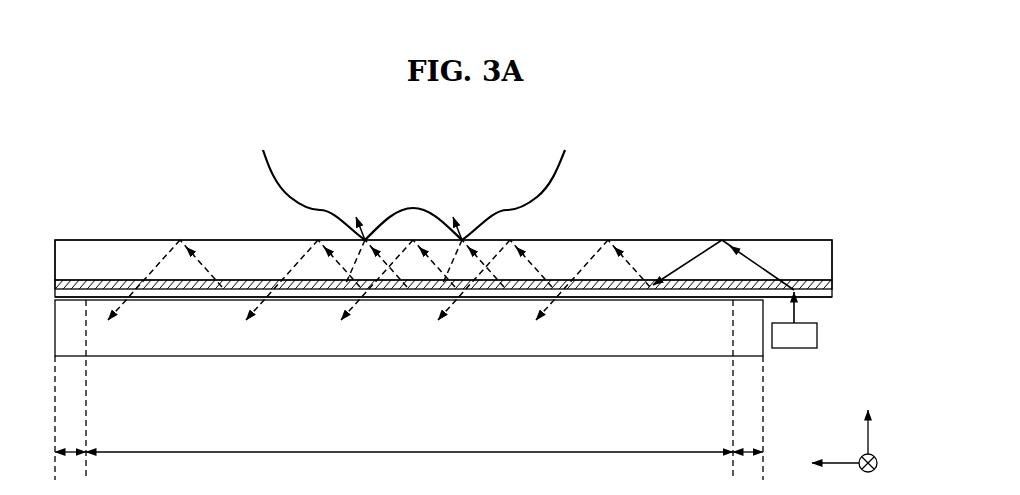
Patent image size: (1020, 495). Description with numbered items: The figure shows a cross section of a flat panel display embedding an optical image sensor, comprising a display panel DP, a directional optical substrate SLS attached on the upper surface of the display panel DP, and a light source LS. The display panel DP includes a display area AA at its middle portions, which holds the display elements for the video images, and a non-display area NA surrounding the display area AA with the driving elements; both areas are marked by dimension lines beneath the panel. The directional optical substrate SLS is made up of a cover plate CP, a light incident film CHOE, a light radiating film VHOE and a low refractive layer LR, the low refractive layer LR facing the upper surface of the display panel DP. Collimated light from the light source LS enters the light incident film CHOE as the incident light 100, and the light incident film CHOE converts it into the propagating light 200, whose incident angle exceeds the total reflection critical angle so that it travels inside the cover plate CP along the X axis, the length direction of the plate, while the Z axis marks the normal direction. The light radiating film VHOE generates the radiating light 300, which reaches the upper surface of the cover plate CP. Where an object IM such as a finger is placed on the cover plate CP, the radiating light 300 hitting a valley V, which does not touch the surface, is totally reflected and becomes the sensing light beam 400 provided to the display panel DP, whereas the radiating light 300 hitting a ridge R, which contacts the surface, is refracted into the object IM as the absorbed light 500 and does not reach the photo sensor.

The incident light 100 is at (787, 313).
The propagating light 200 is at (695, 266).
The radiating light 300 is at (204, 268).
The sensing light beam 400 is at (125, 308).
The absorbed light 500 is at (364, 243).
The object IM is at (286, 183).
The ridge R is at (371, 236).
The valley V is at (416, 205).
The directional optical substrate SLS is at (828, 171).
The cover plate CP is at (657, 252).
The light radiating film VHOE is at (720, 278).
The low refractive layer LR is at (752, 278).
The light incident film CHOE is at (810, 278).
The light source LS is at (806, 337).
The display panel DP is at (652, 347).
The non-display area NA is at (409, 468).
The display area AA is at (409, 468).
The Z-axis Z is at (868, 418).
The X-axis X is at (834, 463).